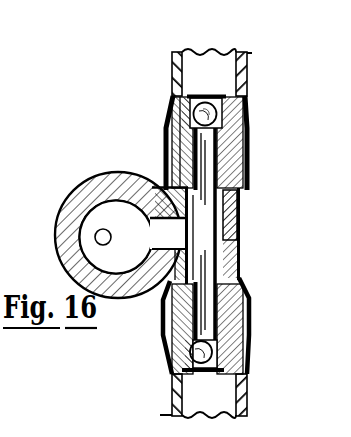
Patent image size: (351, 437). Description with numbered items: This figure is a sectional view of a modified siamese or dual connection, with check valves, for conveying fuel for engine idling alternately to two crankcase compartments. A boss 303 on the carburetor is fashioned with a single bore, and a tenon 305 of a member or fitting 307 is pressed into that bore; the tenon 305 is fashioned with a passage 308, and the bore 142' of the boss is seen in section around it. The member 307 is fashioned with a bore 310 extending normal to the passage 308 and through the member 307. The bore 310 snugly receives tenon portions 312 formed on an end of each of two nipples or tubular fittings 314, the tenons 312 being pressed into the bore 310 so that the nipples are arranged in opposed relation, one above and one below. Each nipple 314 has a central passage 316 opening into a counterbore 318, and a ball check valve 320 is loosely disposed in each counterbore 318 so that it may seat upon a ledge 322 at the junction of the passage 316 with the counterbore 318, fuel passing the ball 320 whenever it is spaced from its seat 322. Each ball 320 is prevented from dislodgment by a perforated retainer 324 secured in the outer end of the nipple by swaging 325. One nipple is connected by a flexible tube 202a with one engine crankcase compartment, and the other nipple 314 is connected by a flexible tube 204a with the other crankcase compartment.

The bore of ring 142' is at (81, 221).
The flexible tube 202a is at (173, 411).
The flexible tube 204a is at (174, 53).
The boss 303 is at (57, 211).
The tenon 305 is at (155, 187).
The member or fitting 307 is at (240, 203).
The passage 308 is at (178, 229).
The bore 310 is at (175, 237).
The tenon portions 312 is at (249, 170).
The nipples or tubular fittings 314 is at (232, 152).
The central passage 316 is at (250, 129).
The counterbore 318 is at (197, 107).
The ball check valve 320 is at (197, 115).
The ledge 322 is at (186, 131).
The perforated retainer 324 is at (178, 75).
The swaging 325 is at (200, 95).